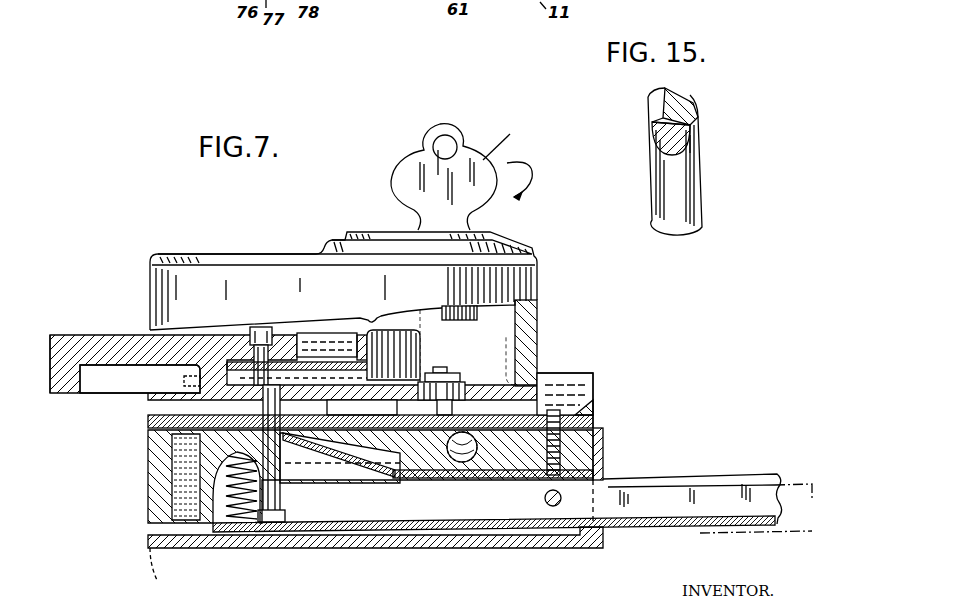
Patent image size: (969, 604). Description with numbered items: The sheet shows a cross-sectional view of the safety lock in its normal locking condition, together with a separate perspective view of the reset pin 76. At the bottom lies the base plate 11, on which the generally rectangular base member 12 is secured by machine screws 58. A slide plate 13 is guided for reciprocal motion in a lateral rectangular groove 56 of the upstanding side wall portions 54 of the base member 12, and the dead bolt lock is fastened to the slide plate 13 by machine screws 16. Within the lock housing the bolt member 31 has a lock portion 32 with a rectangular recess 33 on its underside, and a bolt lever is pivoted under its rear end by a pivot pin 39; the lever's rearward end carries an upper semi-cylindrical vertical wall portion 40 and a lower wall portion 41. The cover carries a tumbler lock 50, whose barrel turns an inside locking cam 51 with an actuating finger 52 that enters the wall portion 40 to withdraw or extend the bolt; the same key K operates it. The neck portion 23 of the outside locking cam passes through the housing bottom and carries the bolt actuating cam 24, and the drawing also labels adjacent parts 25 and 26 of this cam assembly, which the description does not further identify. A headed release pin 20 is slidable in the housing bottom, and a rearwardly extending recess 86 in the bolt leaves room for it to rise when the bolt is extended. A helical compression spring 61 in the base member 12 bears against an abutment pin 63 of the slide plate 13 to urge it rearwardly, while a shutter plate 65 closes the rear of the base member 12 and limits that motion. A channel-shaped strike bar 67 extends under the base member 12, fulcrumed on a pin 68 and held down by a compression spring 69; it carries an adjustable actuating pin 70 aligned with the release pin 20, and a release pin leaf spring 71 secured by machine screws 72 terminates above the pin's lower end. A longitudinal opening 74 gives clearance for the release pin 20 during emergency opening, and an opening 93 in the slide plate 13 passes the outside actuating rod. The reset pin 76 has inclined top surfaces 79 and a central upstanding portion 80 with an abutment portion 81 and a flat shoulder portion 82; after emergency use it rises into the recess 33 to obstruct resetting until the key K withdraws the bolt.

In FIG. 7, the base plate 11 is at (470, 549).
In FIG. 7, the base member 12 is at (150, 508).
In FIG. 7, the slide plate 13 is at (594, 416).
In FIG. 7, the machine screws 16 is at (150, 419).
In FIG. 7, the headed release pin 20 is at (284, 388).
In FIG. 7, the neck portion 23 is at (465, 372).
In FIG. 7, the bolt actuating cam 24 is at (467, 388).
In FIG. 7, the flange 25 is at (468, 380).
In FIG. 7, the stem 26 is at (455, 371).
In FIG. 7, the bolt member 31 is at (100, 333).
In FIG. 7, the lock portion 32 is at (50, 345).
In FIG. 7, the rectangular recess 33 is at (106, 398).
In FIG. 7, the pivot pin 39 is at (270, 326).
In FIG. 7, the semi-cylindrical vertical wall portion 40 is at (417, 337).
In FIG. 7, the semi-cylindrical lower wall portion 41 is at (327, 383).
In FIG. 7, the tumbler lock 50 is at (375, 232).
In FIG. 7, the inside locking cam 51 is at (453, 317).
In FIG. 7, the actuating finger 52 is at (372, 322).
In FIG. 7, the upstanding side wall portions 54 is at (563, 380).
In FIG. 7, the lateral rectangular groove 56 is at (590, 410).
In FIG. 7, the machine screws 58 is at (162, 574).
In FIG. 7, the helical compression spring 61 is at (448, 462).
In FIG. 7, the abutment pin 63 is at (513, 470).
In FIG. 7, the shutter plate 65 is at (604, 462).
In FIG. 7, the strike bar 67 is at (750, 478).
In FIG. 7, the pin 68 is at (556, 508).
In FIG. 7, the compression spring 69 is at (236, 530).
In FIG. 7, the adjustable actuating pin 70 is at (282, 470).
In FIG. 7, the release pin leaf spring 71 is at (377, 460).
In FIG. 7, the machine screws 72 is at (548, 512).
In FIG. 7, the longitudinal opening 74 is at (360, 440).
In FIG. 7, the rearwardly extending recess 86 is at (184, 381).
In FIG. 7, the opening 93 is at (550, 412).
In FIG. 7, the key K is at (461, 175).
In FIG. 15, the reset pin 76 is at (700, 192).
In FIG. 15, the inclined top surfaces 79 is at (690, 104).
In FIG. 15, the central upstanding portion 80 is at (648, 122).
In FIG. 15, the abutment portion 81 is at (658, 92).
In FIG. 15, the flat shoulder portion 82 is at (693, 111).